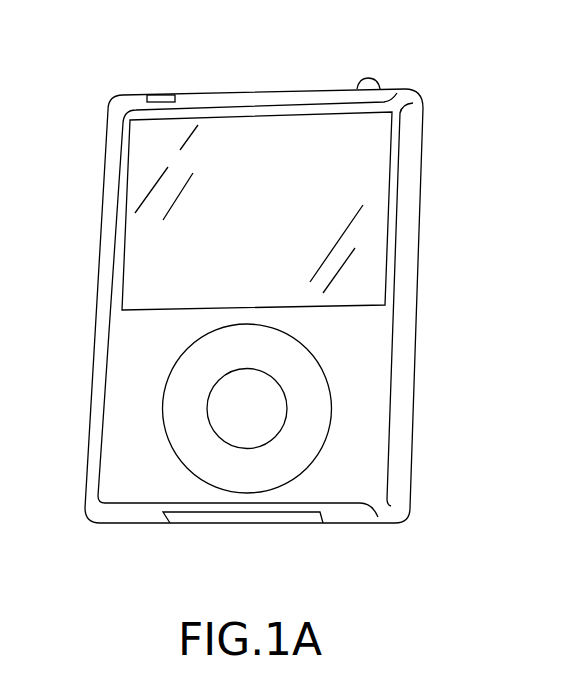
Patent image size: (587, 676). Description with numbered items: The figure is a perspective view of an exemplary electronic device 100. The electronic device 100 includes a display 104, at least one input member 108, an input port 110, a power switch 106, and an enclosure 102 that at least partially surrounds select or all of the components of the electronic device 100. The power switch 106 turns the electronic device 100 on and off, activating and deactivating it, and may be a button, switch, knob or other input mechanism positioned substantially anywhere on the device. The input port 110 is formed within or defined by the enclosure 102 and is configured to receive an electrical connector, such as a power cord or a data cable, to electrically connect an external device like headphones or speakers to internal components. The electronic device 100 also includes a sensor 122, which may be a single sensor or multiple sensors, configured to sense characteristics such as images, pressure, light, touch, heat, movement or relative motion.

The electronic device 100 is at (287, 300).
The enclosure 102 is at (105, 462).
The display 104 is at (383, 188).
The power switch 106 is at (376, 77).
The input member 108 is at (306, 375).
The input port 110 is at (285, 518).
The sensor 122 is at (167, 96).